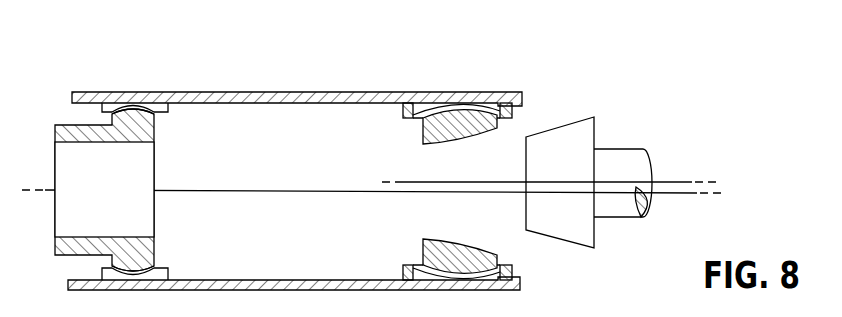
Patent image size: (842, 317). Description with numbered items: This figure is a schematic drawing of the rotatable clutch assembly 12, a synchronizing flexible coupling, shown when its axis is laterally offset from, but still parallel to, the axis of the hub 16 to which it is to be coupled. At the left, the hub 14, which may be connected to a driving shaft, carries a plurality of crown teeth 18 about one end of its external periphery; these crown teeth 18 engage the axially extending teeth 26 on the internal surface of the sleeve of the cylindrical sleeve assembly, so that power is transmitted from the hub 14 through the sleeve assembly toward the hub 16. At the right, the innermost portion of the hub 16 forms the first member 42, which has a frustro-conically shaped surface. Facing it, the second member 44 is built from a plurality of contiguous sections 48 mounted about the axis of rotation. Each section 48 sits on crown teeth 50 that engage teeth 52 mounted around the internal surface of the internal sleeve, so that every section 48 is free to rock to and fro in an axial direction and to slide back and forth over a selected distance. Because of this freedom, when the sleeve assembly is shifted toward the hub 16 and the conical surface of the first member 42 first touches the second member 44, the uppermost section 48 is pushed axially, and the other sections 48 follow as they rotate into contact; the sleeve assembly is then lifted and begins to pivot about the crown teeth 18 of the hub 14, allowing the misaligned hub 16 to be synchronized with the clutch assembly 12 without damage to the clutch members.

The rotatable clutch assembly 12 is at (295, 89).
The hub 14 is at (46, 121).
The hub 16 is at (607, 117).
The crown teeth 18 is at (154, 190).
The teeth 26 is at (156, 115).
The first member 42 is at (560, 127).
The second member 44 is at (448, 169).
The sections 48 is at (437, 133).
The crown teeth 50 is at (428, 119).
The teeth 52 is at (490, 108).